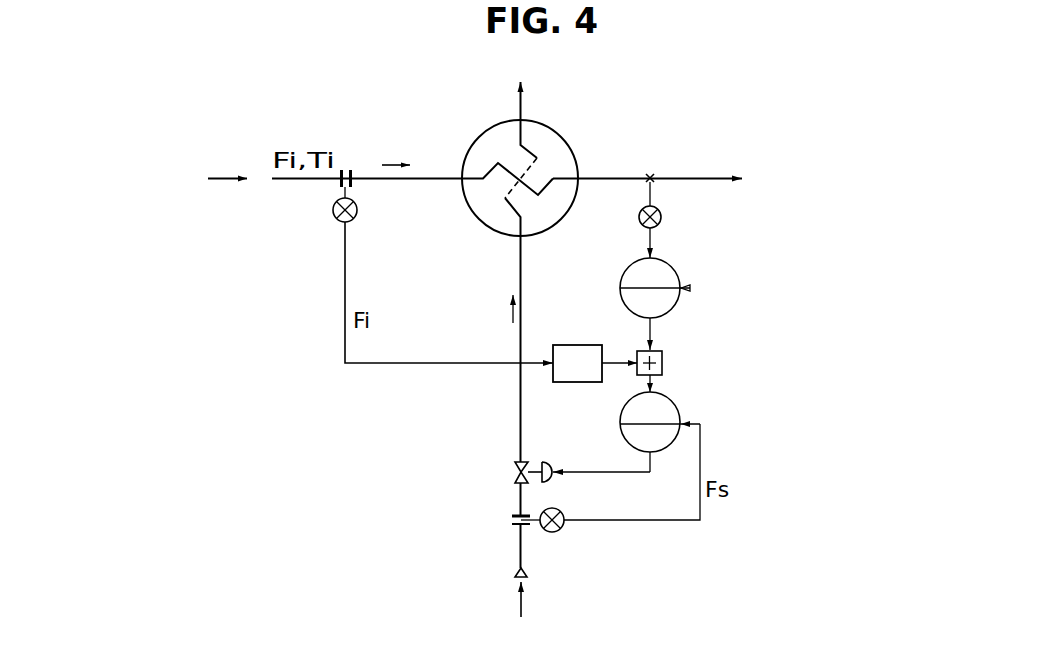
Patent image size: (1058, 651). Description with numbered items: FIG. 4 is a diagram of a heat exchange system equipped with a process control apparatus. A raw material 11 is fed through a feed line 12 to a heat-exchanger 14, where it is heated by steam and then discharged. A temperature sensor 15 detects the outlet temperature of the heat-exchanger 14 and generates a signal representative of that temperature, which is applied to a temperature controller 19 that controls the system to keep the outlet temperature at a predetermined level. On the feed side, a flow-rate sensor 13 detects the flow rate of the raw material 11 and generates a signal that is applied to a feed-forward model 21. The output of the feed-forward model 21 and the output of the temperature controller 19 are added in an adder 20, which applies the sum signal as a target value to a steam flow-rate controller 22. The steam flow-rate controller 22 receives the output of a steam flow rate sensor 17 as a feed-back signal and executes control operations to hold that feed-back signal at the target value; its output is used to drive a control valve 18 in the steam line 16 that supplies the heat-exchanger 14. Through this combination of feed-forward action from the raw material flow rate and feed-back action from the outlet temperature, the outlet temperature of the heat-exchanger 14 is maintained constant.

The raw material 11 is at (222, 179).
The feed line 12 is at (310, 181).
The flow-rate sensor 13 is at (355, 219).
The heat-exchanger 14 is at (462, 195).
The temperature sensor 15 is at (660, 208).
The steam line 16 is at (523, 603).
The steam flow rate sensor 17 is at (560, 530).
The control valve 18 is at (549, 482).
The temperature controller 19 is at (675, 268).
The adder 20 is at (663, 361).
The feed-forward model 21 is at (552, 378).
The steam flow-rate controller 22 is at (680, 410).